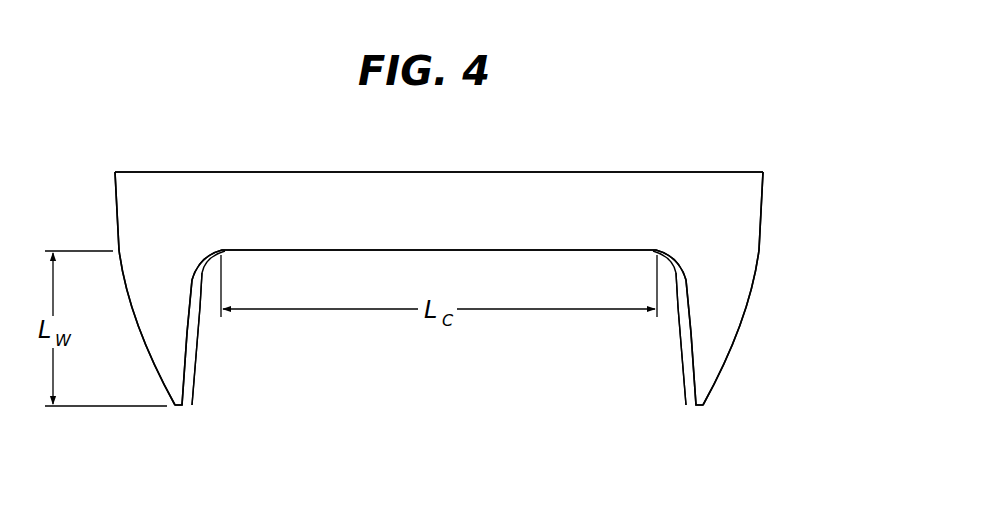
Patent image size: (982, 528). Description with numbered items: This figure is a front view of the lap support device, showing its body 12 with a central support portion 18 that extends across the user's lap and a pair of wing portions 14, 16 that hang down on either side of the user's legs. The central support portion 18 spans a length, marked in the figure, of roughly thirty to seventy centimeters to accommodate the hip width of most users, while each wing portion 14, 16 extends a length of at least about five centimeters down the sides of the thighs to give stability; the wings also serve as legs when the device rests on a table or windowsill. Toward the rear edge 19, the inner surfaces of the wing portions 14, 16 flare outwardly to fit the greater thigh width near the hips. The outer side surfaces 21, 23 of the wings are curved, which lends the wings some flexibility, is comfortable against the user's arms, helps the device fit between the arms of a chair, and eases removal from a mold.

The body 12 is at (749, 140).
The wing portion 14 is at (717, 337).
The wing portion 16 is at (148, 330).
The central support portion 18 is at (515, 205).
The rear edge 19 is at (432, 173).
The outer side surface 21 is at (757, 262).
The outer side surface 23 is at (120, 265).